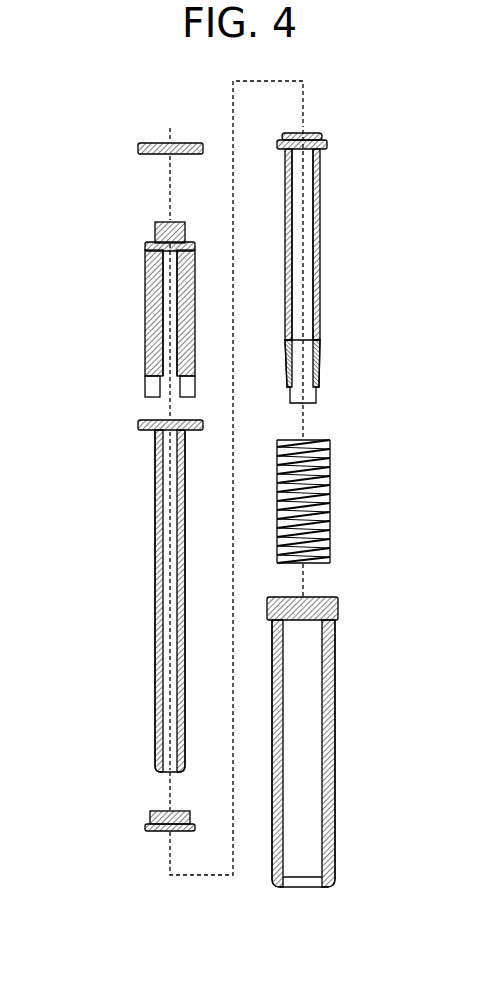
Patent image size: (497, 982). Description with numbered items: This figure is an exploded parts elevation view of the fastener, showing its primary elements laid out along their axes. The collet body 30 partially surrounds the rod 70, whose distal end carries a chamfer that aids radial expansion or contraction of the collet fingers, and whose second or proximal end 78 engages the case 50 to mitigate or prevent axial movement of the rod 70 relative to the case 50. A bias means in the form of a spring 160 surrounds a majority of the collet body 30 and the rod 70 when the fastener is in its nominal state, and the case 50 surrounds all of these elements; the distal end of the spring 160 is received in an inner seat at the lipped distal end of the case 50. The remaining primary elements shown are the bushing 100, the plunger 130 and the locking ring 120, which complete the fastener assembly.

The locking ring 120 is at (138, 147).
The plunger 130 is at (145, 312).
The second end 78 is at (186, 418).
The rod 70 is at (155, 598).
The bushing 100 is at (150, 811).
The collet body 30 is at (322, 282).
The spring 160 is at (331, 446).
The case 50 is at (338, 663).